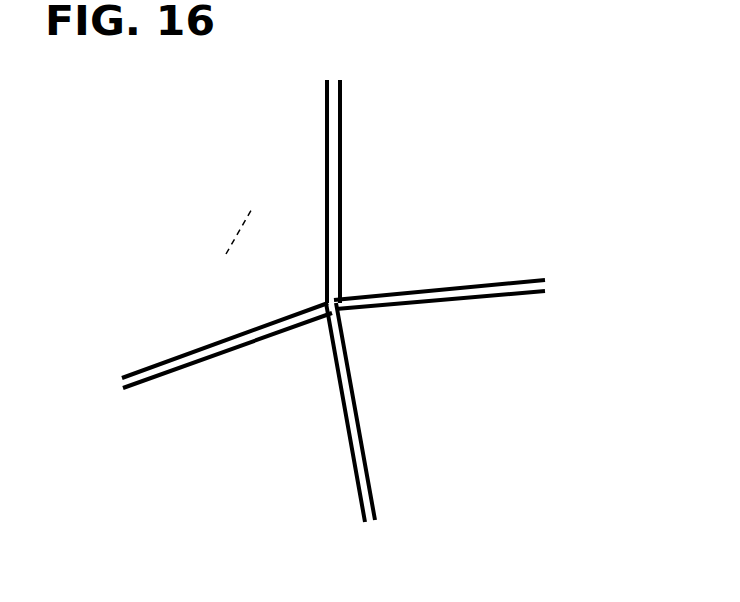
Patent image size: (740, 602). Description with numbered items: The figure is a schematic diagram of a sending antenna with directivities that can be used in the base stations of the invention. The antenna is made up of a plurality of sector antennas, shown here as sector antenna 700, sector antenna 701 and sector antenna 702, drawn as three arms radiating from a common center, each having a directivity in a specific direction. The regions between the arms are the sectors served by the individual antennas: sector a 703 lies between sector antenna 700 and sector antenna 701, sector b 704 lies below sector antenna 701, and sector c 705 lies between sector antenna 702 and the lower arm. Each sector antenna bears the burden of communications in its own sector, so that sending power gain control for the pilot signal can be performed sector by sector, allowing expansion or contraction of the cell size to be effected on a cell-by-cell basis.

The sector antenna 700 is at (340, 132).
The sector antenna 701 is at (483, 298).
The sector antenna 702 is at (143, 388).
The sector a 703 is at (457, 201).
The sector b 704 is at (484, 431).
The sector c 705 is at (277, 428).